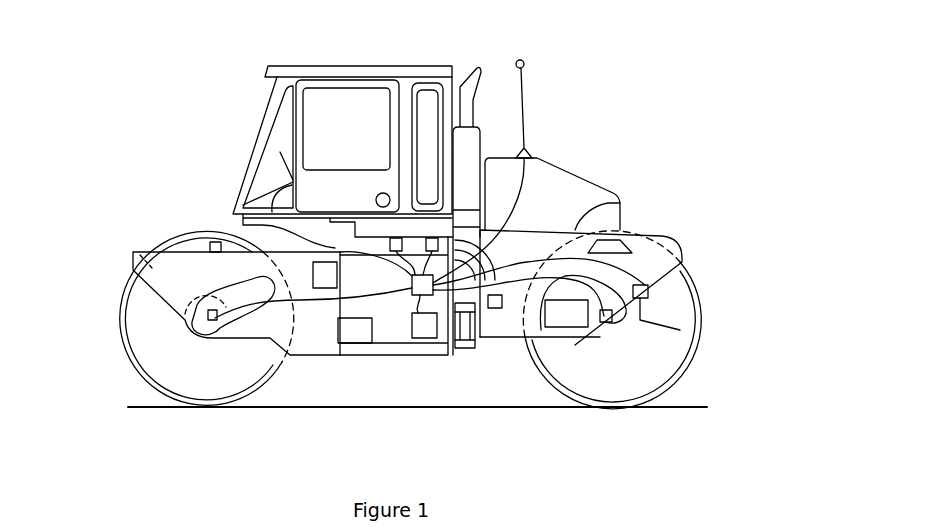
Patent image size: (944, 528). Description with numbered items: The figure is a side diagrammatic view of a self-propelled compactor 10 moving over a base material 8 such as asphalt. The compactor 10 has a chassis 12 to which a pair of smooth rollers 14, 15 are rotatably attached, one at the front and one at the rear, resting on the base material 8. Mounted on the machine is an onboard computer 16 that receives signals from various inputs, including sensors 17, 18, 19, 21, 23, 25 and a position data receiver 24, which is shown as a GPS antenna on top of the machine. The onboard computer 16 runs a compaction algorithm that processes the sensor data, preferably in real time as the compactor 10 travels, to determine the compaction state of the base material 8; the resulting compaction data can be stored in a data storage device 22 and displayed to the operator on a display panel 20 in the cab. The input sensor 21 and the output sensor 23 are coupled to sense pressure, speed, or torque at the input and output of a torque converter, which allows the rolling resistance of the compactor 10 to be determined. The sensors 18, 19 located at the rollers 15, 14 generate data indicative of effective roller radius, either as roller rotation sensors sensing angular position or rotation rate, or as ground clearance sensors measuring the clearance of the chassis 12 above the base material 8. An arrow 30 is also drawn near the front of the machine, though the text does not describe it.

The base material 8 is at (373, 407).
The compactor 10 is at (607, 86).
The chassis 12 is at (666, 237).
The roller 14 is at (701, 313).
The roller 15 is at (138, 280).
The onboard computer 16 is at (412, 294).
The sensor 17 is at (495, 308).
The sensor 18 is at (200, 315).
The sensor 19 is at (604, 323).
The display panel 20 is at (270, 165).
The input sensor 21 is at (395, 237).
The data storage device 22 is at (437, 338).
The output sensor 23 is at (432, 237).
The position data receiver 24 is at (527, 122).
The sensor 25 is at (680, 330).
The direction of travel 30 is at (360, 307).